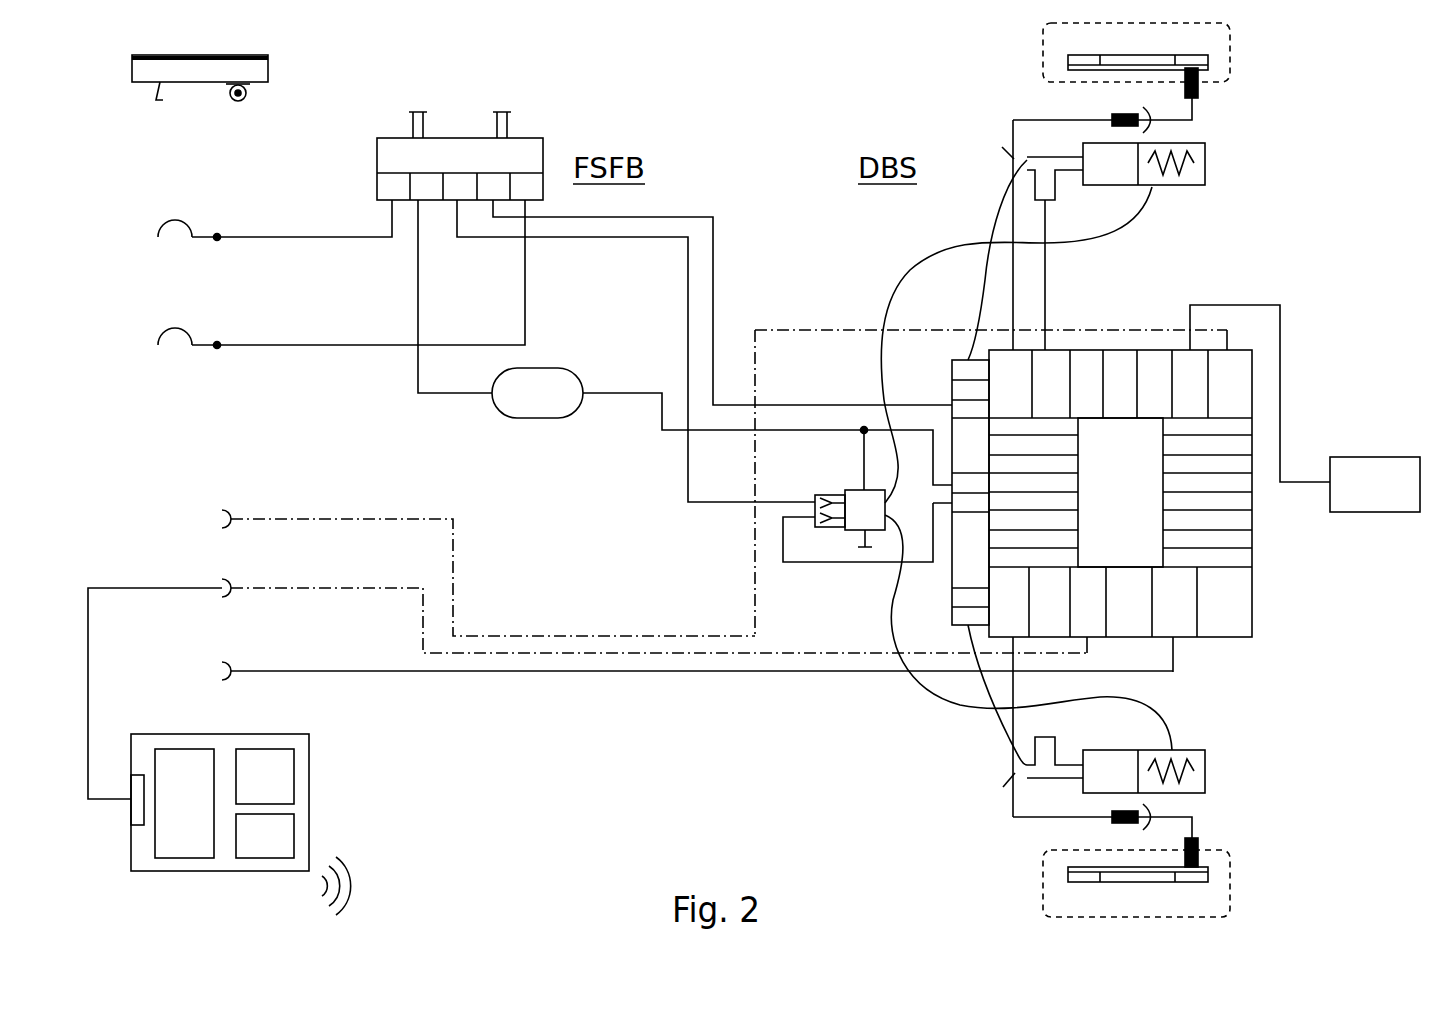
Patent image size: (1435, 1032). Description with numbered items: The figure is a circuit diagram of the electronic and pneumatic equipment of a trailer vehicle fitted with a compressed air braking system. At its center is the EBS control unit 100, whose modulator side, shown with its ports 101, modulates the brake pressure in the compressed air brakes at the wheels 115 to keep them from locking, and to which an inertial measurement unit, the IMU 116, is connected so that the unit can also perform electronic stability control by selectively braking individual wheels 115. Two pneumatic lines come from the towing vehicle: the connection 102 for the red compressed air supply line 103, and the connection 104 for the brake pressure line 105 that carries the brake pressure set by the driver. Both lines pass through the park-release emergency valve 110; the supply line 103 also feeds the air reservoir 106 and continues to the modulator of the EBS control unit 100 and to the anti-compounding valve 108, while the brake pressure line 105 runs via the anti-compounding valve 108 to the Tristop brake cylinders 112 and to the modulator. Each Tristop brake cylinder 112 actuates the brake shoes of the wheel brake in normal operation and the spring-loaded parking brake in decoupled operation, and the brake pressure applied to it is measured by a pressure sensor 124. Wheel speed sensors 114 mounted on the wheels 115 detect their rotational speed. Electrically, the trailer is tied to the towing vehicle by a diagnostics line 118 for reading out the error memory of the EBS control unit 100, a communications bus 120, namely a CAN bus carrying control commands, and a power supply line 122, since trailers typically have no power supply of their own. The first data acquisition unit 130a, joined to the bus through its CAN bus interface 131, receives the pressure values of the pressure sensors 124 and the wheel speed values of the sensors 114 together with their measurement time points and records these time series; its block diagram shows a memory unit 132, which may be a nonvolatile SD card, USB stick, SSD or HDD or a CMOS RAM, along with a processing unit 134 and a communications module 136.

The EBS control unit 100 is at (1238, 395).
The valve block ports 101 is at (1252, 518).
The connection for compressed air supply line 102 is at (175, 236).
The compressed air supply line 103 is at (262, 237).
The connection for brake pressure line 104 is at (175, 344).
The brake pressure line 105 is at (282, 345).
The air reservoir 106 is at (564, 368).
The anti-compounding valve 108 is at (858, 497).
The park-release emergency valve 110 is at (448, 150).
The Tristop brake cylinder 112 is at (1203, 153).
The wheel speed sensor 114 is at (1205, 85).
The wheel 115 is at (1223, 34).
The IMU 116 is at (1375, 457).
The diagnostics line 118 is at (321, 519).
The communications bus 120 is at (318, 588).
The power supply line 122 is at (286, 671).
The pressure sensor 124 is at (1055, 178).
The first data acquisition unit 130a is at (299, 799).
The CAN bus interface 131 is at (129, 816).
The memory unit 132 is at (175, 758).
The processing unit 134 is at (279, 771).
The communications module 136 is at (262, 843).